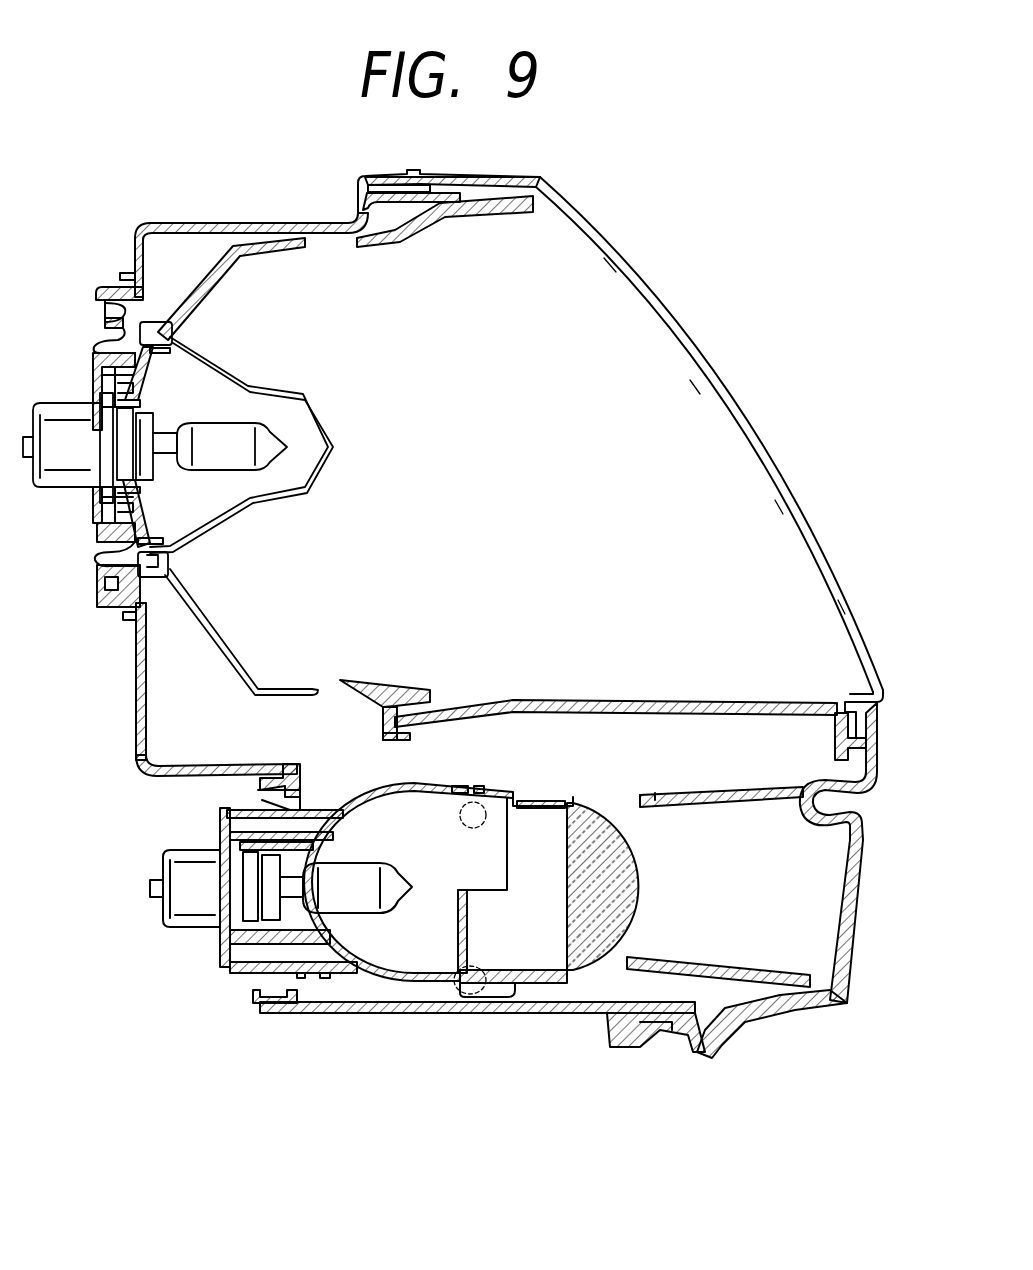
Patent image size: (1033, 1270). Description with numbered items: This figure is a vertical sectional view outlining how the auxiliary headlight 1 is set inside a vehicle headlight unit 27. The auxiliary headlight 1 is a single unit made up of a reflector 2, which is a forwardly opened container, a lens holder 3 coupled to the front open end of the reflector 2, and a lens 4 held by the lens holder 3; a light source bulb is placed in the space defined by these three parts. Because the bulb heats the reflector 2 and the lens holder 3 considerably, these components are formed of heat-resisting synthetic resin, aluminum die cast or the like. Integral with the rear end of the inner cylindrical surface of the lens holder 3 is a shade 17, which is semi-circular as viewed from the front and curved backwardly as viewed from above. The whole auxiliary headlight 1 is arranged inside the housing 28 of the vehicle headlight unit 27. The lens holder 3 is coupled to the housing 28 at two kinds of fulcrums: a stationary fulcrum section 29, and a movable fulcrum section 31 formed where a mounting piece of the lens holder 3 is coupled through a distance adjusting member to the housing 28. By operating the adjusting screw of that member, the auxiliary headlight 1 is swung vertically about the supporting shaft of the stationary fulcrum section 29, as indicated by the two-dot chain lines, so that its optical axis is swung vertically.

The vehicle headlight unit 27 is at (676, 218).
The housing 28 is at (203, 778).
The auxiliary headlight 1 is at (414, 917).
The reflector 2 is at (358, 976).
The lens holder 3 is at (567, 985).
The lens 4 is at (598, 818).
The shade 17 is at (477, 893).
The stationary fulcrum section 29 is at (476, 802).
The movable fulcrum section 31 is at (470, 1000).